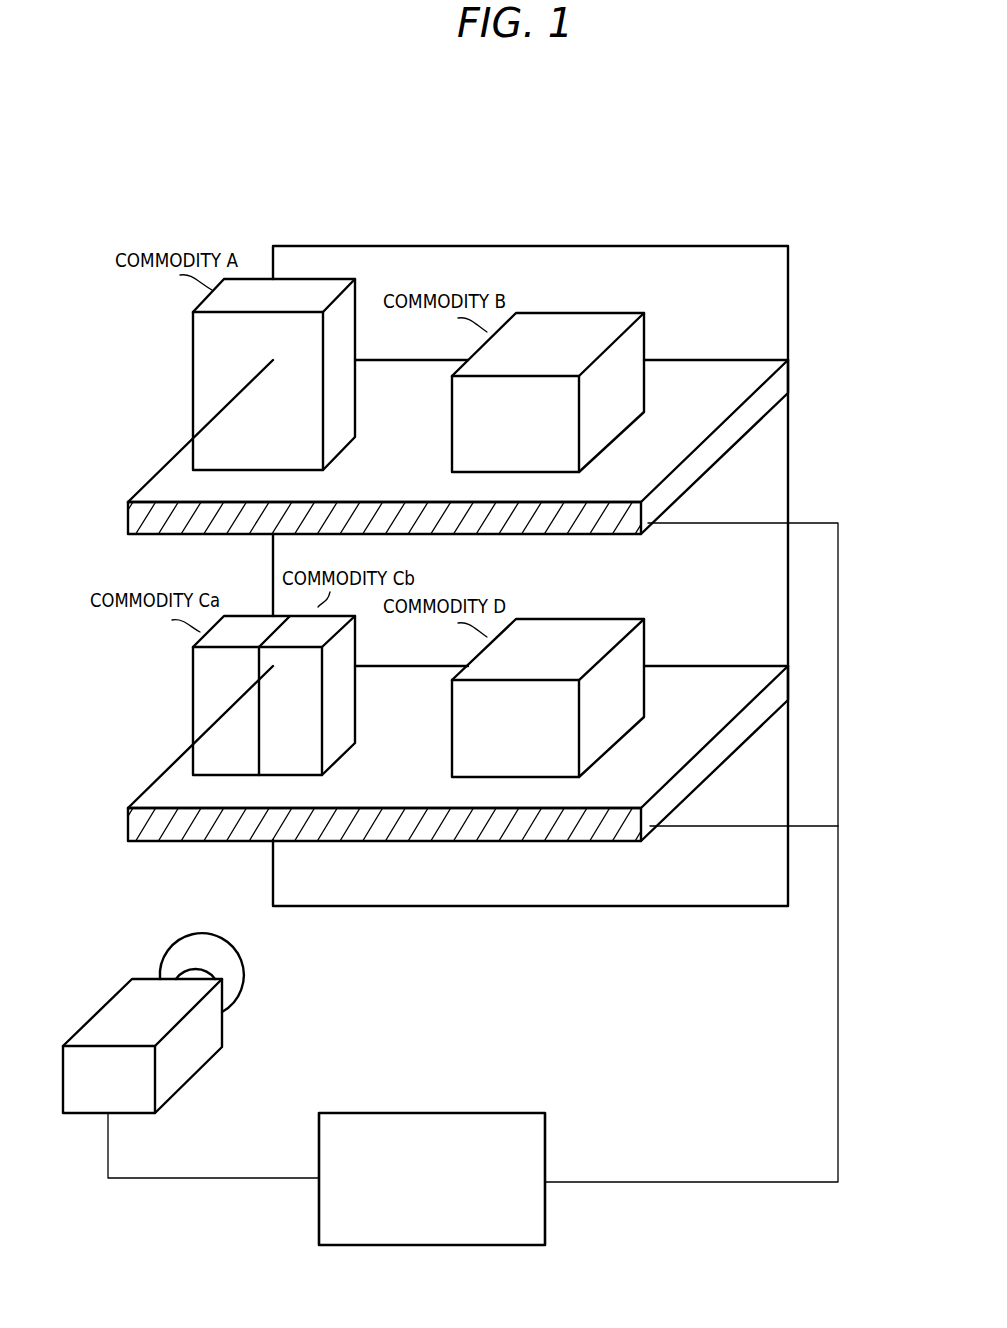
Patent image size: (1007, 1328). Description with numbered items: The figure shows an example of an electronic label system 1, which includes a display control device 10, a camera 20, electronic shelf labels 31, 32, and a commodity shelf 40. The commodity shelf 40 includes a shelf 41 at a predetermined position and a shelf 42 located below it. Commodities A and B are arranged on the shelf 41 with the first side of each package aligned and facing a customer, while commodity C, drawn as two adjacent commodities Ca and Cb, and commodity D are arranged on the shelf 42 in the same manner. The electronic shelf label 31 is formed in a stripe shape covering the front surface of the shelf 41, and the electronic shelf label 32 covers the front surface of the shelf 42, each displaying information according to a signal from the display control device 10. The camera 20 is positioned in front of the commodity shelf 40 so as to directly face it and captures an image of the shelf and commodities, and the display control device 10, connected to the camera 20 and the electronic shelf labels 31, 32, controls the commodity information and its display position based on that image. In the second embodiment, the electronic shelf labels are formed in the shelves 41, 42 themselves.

The electronic label system 1 is at (532, 170).
The display control device 10 is at (365, 1112).
The camera 20 is at (100, 1003).
The electronic shelf label 31 is at (127, 518).
The electronic shelf label 32 is at (127, 826).
The commodity shelf 40 is at (340, 246).
The shelf 41 is at (157, 470).
The shelf 42 is at (157, 775).